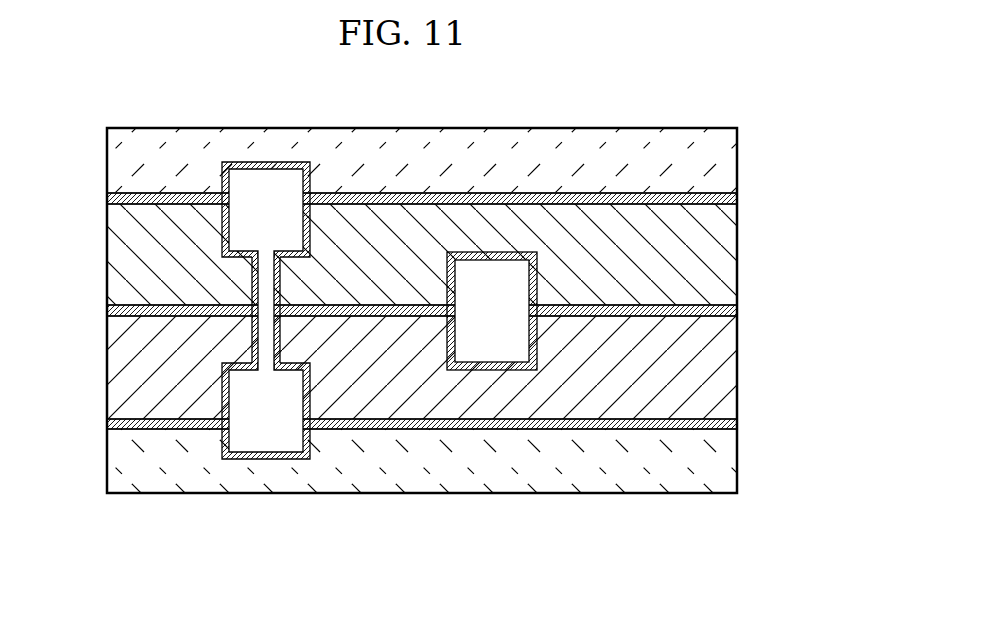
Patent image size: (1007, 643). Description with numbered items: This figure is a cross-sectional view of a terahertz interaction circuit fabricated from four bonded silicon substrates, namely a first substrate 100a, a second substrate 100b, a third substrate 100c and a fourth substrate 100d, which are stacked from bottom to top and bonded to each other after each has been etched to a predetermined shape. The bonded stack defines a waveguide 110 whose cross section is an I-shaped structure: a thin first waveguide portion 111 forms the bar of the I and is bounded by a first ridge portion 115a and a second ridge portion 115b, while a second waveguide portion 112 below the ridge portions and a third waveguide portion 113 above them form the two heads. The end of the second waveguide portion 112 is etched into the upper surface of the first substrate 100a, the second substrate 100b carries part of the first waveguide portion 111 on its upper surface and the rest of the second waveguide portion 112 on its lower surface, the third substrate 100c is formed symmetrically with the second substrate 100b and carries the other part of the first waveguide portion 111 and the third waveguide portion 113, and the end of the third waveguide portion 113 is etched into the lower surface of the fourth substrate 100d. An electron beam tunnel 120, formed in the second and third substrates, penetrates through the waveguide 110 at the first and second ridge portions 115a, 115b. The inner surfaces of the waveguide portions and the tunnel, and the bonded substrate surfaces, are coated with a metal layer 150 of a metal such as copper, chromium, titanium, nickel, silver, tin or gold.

The waveguide 110 is at (443, 284).
The first substrate 100a is at (737, 462).
The second substrate 100b is at (737, 364).
The third substrate 100c is at (737, 253).
The fourth substrate 100d is at (737, 161).
The metal layer 150 is at (737, 197).
The first waveguide portion 111 is at (266, 350).
The second waveguide portion 112 is at (283, 418).
The third waveguide portion 113 is at (265, 207).
The first ridge portion 115a is at (251, 339).
The second ridge portion 115b is at (281, 340).
The electron beam tunnel 120 is at (488, 315).